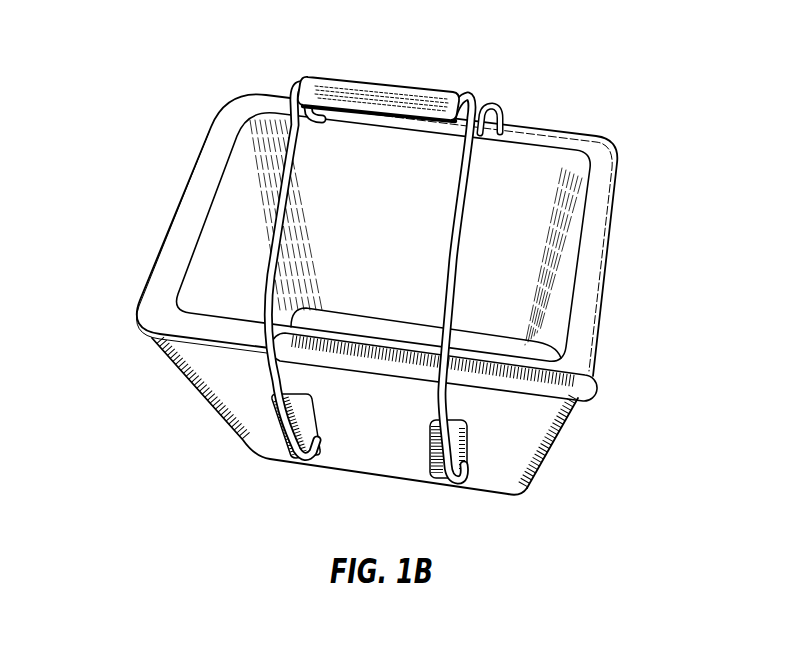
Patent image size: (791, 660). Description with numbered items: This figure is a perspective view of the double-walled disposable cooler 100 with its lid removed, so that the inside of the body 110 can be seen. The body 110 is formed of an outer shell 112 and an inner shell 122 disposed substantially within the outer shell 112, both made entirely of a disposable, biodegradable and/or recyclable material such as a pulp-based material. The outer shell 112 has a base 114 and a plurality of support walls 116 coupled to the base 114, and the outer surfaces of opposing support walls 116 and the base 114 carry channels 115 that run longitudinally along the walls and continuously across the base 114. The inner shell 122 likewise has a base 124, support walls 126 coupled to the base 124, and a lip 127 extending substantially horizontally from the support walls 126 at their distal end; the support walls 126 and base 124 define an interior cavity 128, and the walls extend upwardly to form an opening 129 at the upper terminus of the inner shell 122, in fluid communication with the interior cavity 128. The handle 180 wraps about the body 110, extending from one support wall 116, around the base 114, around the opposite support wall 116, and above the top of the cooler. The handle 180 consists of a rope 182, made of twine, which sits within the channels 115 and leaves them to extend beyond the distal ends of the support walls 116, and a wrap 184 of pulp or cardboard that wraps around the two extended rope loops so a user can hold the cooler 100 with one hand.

The double-walled disposable cooler 100 is at (135, 90).
The body 110 is at (165, 446).
The outer shell 112 is at (543, 427).
The base 114 is at (400, 480).
The channels 115 is at (460, 450).
The support walls 116 is at (360, 440).
The inner shell 122 is at (567, 250).
The base 124 is at (527, 353).
The support walls 126 is at (550, 168).
The lip 127 is at (577, 360).
The interior cavity 128 is at (215, 285).
The opening 129 is at (247, 176).
The handle 180 is at (492, 80).
The rope 182 is at (503, 115).
The wrap 184 is at (391, 93).